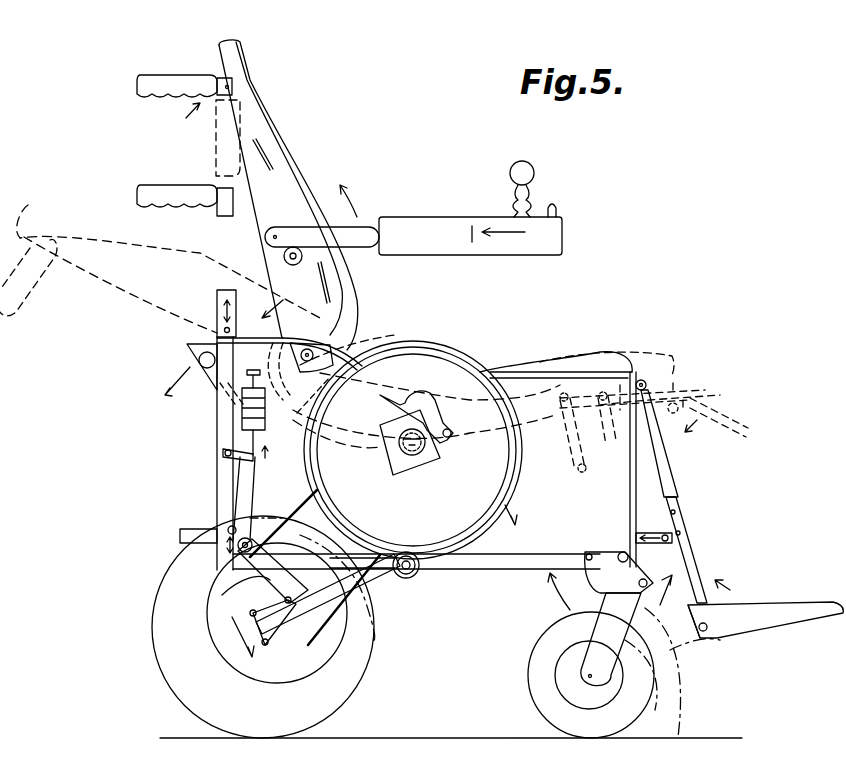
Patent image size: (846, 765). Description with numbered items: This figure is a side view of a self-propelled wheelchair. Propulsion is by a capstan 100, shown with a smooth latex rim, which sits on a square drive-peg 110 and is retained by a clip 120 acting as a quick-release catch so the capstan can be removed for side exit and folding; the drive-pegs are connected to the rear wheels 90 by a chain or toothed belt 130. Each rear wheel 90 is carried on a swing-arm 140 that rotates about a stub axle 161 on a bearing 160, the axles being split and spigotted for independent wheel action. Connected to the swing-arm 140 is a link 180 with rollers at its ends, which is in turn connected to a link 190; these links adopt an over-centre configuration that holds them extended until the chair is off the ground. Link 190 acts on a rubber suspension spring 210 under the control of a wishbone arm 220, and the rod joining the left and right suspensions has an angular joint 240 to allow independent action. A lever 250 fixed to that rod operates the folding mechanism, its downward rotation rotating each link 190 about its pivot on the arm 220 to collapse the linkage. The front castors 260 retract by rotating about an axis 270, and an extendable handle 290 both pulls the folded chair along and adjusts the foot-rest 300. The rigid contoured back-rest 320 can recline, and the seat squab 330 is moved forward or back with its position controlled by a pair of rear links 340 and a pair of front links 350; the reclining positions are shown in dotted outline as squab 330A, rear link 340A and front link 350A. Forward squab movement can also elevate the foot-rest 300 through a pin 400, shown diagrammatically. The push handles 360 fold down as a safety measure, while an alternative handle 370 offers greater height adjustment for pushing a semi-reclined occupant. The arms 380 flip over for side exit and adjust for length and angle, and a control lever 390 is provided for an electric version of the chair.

The rear wheel 90 is at (340, 686).
The capstan 100 is at (432, 521).
The drive-peg 110 is at (440, 455).
The clip 120 is at (440, 400).
The chain or toothed belt 130 is at (375, 620).
The swing-arm 140 is at (396, 576).
The bearing 160 is at (445, 558).
The stub axle 161 is at (420, 568).
The link 180 is at (228, 594).
The link 190 is at (250, 516).
The rubber suspension spring 210 is at (250, 413).
The arm 220 is at (233, 451).
The angular joint 240 is at (237, 460).
The lever 250 is at (218, 403).
The front castor 260 is at (700, 660).
The axis 270 is at (672, 560).
The handle 290 is at (660, 530).
The foot-rest 300 is at (760, 613).
The back-rest 320 is at (273, 187).
The seat squab 330 is at (603, 360).
The seat squab in reclining position 330A is at (668, 365).
The link 340 is at (345, 322).
The link in reclining position 340A is at (372, 336).
The link 350 is at (584, 449).
The link in reclining position 350A is at (660, 435).
The handle 360 is at (170, 100).
The alternative handle 370 is at (145, 195).
The arm 380 is at (497, 248).
The control lever 390 is at (535, 172).
The pin 400 is at (690, 390).